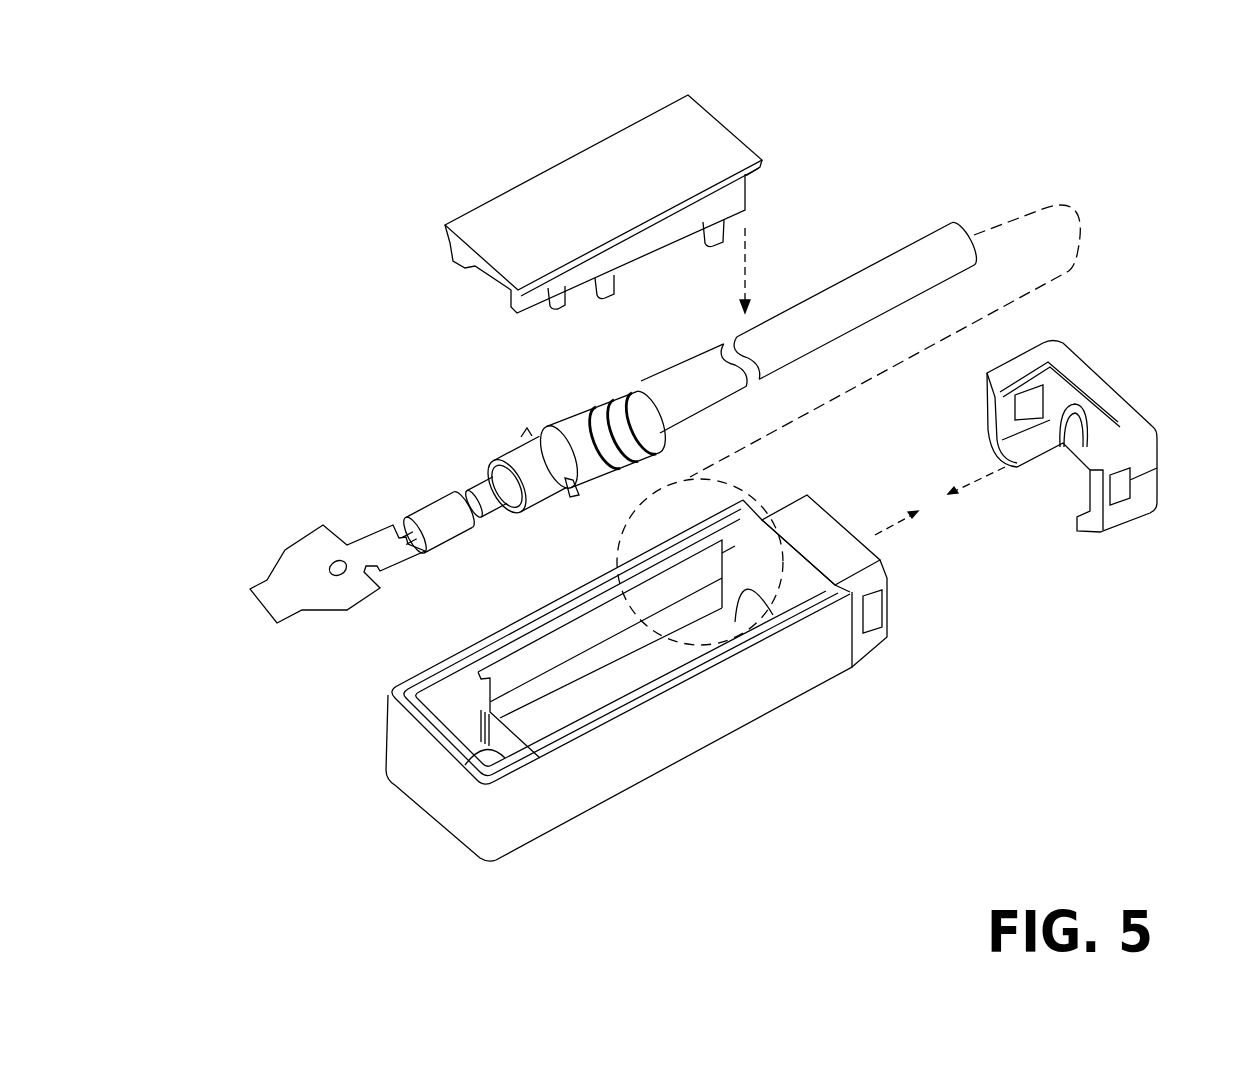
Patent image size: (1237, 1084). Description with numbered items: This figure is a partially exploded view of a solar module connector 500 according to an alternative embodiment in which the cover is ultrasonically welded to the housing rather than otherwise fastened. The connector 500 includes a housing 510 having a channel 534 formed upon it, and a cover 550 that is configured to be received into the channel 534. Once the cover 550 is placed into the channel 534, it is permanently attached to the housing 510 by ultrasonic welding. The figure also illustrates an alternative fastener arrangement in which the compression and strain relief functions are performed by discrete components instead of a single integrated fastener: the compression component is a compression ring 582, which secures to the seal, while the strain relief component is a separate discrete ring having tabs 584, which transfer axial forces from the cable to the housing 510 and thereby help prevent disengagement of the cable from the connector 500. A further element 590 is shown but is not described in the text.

The connector 500 is at (222, 905).
The housing 510 is at (671, 710).
The channel 534 is at (622, 571).
The cover 550 is at (573, 190).
The compression ring 582 is at (600, 463).
The tabs 584 is at (527, 435).
The clip 590 is at (1222, 545).